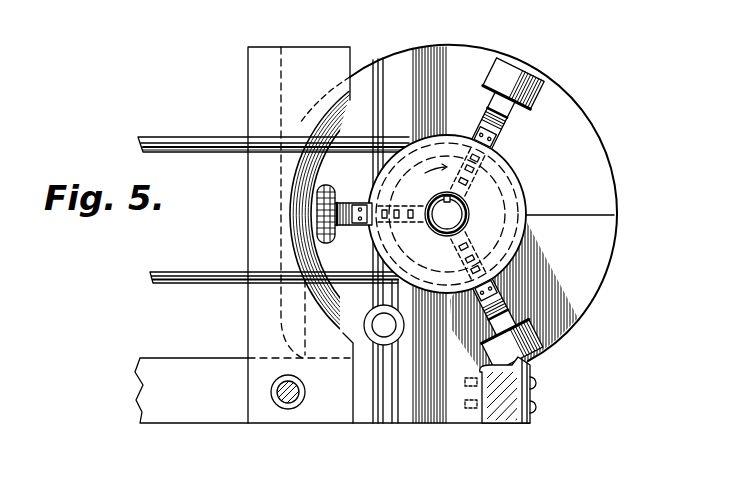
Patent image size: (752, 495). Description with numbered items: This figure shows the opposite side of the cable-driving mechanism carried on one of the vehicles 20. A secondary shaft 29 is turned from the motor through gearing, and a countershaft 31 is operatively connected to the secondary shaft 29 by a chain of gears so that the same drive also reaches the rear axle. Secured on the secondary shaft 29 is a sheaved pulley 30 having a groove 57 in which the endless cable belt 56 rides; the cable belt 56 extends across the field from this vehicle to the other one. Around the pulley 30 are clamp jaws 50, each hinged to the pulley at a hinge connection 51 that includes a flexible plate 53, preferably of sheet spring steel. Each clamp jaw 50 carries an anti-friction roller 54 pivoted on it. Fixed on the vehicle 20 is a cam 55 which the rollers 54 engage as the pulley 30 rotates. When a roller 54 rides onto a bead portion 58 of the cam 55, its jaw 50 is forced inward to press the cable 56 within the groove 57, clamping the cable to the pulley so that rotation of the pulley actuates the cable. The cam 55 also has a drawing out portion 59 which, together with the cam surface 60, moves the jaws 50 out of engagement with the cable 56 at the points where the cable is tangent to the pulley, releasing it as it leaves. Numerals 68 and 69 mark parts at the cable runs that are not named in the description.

The vehicle 20 is at (492, 424).
The secondary shaft 29 is at (453, 217).
The pulley 30 is at (520, 197).
The countershaft 31 is at (289, 406).
The clamp jaw 50 is at (486, 117).
The hinge connection 51 is at (438, 239).
The flexible plate 53 is at (490, 158).
The anti-friction roller 54 is at (538, 108).
The cam 55 is at (592, 112).
The endless cable belt 56 is at (202, 133).
The groove 57 is at (532, 233).
The bead portion 58 is at (473, 60).
The drawing out portion 59 is at (335, 115).
The cam surface 60 is at (398, 70).
The belt strip 68 is at (178, 137).
The lower belt 69 is at (205, 271).